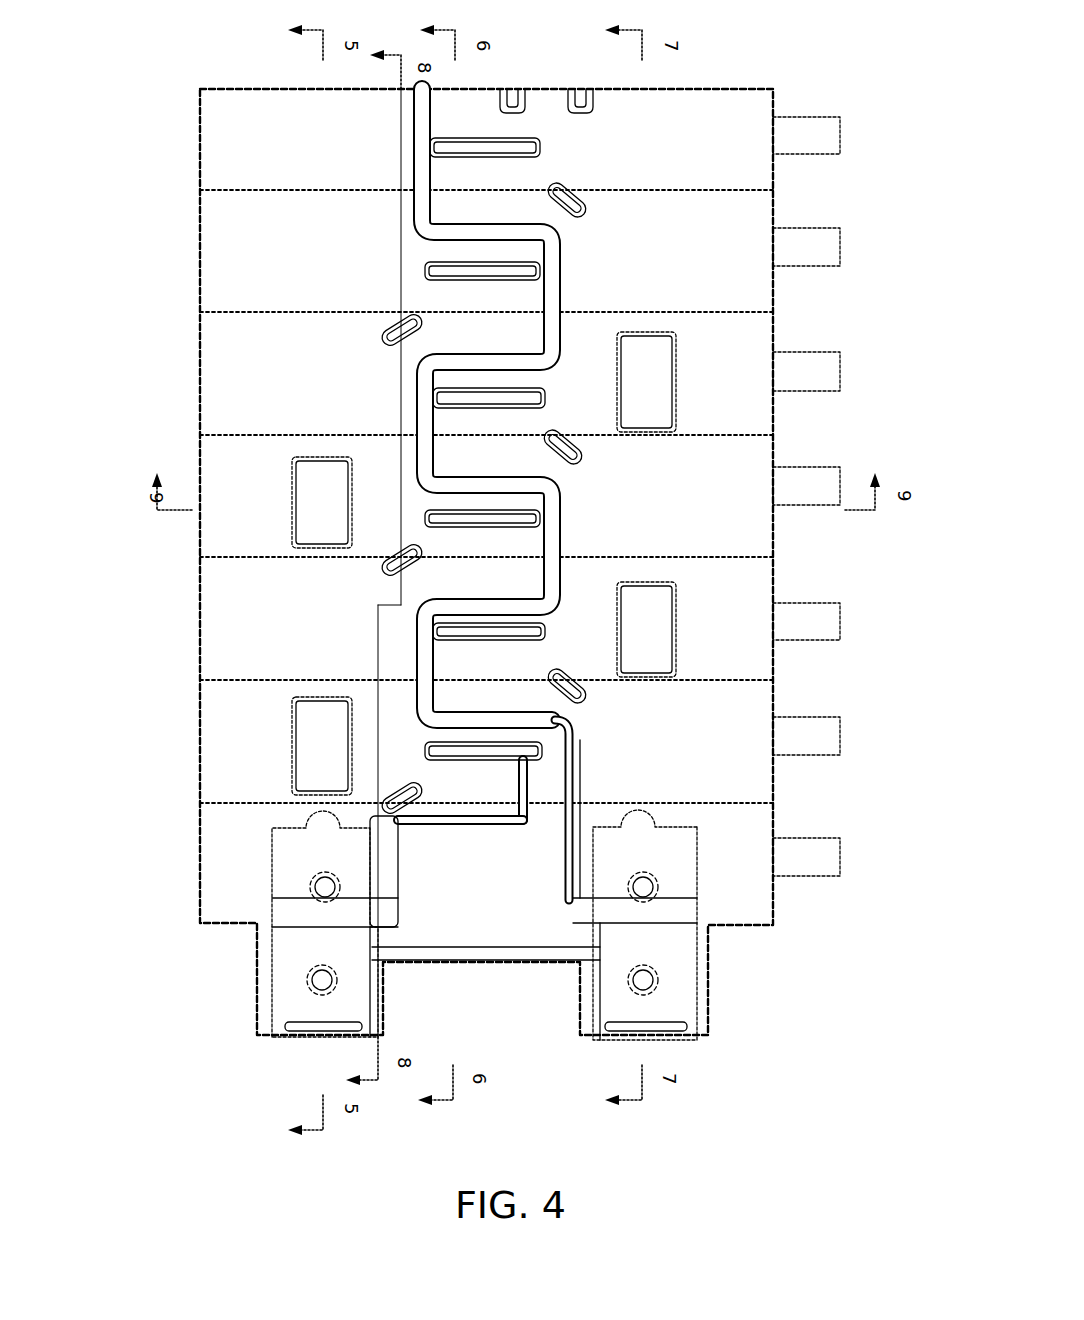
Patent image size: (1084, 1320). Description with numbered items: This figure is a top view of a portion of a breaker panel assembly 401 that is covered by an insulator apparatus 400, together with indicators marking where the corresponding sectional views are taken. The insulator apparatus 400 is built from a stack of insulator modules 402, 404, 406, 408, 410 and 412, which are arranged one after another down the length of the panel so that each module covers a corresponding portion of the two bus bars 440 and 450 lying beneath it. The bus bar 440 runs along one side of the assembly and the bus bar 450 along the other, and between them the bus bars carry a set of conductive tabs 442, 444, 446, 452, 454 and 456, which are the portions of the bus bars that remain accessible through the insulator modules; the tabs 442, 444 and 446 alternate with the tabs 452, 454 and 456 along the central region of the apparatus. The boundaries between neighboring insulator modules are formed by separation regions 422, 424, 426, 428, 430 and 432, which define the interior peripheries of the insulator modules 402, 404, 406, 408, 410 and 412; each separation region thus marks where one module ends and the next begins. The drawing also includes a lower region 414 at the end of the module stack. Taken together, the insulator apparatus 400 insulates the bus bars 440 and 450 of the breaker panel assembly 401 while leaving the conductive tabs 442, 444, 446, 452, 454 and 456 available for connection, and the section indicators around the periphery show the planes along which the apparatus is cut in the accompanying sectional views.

The insulator apparatus 400 is at (498, 521).
The breaker panel assembly 401 is at (409, 482).
The insulator module 402 is at (770, 209).
The insulator module 404 is at (770, 333).
The insulator module 406 is at (728, 418).
The insulator module 408 is at (771, 577).
The insulator module 410 is at (728, 668).
The insulator module 412 is at (771, 816).
The seventh cell section 414 is at (513, 925).
The separation region 422 is at (540, 176).
The separation region 424 is at (540, 299).
The separation region 426 is at (533, 421).
The separation region 428 is at (533, 543).
The separation region 430 is at (533, 666).
The separation region 432 is at (533, 789).
The bus bar 440 is at (774, 101).
The conductive tab 442 is at (555, 137).
The conductive tab 444 is at (524, 390).
The conductive tab 446 is at (527, 648).
The bus bar 450 is at (235, 436).
The conductive tab 452 is at (430, 262).
The conductive tab 454 is at (449, 511).
The conductive tab 456 is at (450, 744).